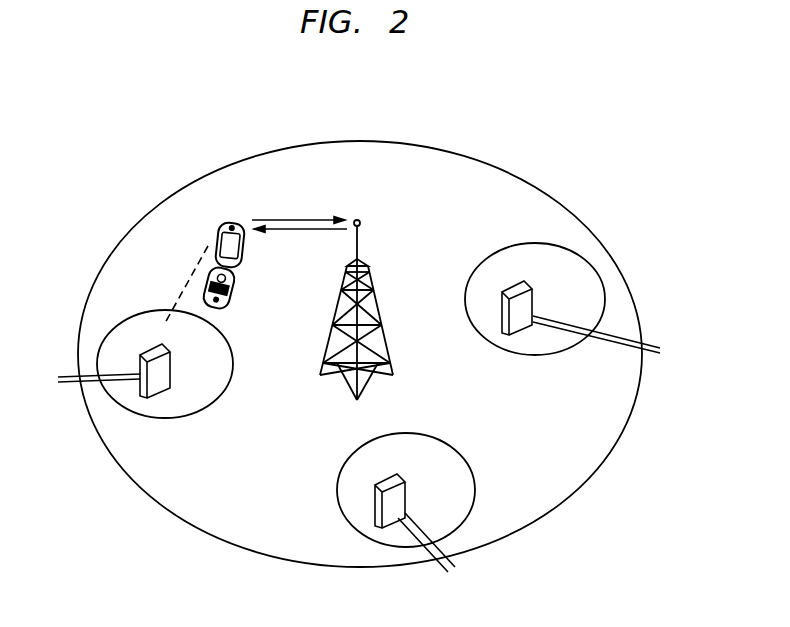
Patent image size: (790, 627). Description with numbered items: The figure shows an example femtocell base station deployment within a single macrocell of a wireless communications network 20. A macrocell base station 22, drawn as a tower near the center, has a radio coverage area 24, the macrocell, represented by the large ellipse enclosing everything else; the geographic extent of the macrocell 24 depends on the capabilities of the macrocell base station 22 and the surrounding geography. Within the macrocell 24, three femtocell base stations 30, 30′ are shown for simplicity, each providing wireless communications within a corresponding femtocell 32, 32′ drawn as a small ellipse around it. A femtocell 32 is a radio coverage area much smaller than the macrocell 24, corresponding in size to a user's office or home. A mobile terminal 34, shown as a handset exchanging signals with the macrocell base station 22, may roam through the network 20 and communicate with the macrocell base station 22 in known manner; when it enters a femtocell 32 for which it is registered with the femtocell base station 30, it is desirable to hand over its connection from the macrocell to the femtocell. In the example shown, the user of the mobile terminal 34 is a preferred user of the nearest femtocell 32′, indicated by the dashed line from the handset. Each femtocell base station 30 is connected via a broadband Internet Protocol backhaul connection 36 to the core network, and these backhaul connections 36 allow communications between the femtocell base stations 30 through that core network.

The wireless communication system 20 is at (95, 198).
The macrocell base station 22 is at (382, 303).
The macrocell 24 is at (530, 183).
The femtocell base station 30 is at (173, 365).
The wireless access point 30′ is at (409, 498).
The femtocell 32 is at (490, 256).
The nearest femtocell 32′ is at (172, 422).
The mobile terminal 34 is at (218, 234).
The backhaul connection 36 is at (58, 381).